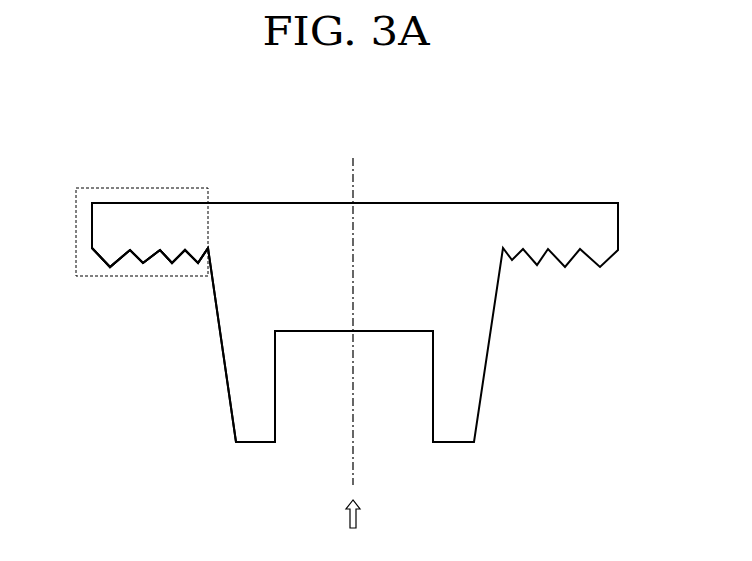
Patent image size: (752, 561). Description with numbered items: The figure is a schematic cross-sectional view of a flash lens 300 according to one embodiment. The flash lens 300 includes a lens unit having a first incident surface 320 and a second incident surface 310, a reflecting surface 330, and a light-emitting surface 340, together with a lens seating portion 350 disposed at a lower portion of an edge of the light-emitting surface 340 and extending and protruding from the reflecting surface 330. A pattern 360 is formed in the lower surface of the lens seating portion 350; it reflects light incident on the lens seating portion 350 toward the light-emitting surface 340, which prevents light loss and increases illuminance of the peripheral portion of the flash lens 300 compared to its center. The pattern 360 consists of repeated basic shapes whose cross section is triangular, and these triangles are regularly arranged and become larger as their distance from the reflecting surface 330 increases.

The flash lens 300 is at (621, 160).
The second incident surface 310 is at (277, 407).
The first incident surface 320 is at (330, 331).
The reflecting surface 330 is at (217, 347).
The light-emitting surface 340 is at (433, 203).
The lens seating portion 350 is at (141, 188).
The pattern 360 is at (97, 262).